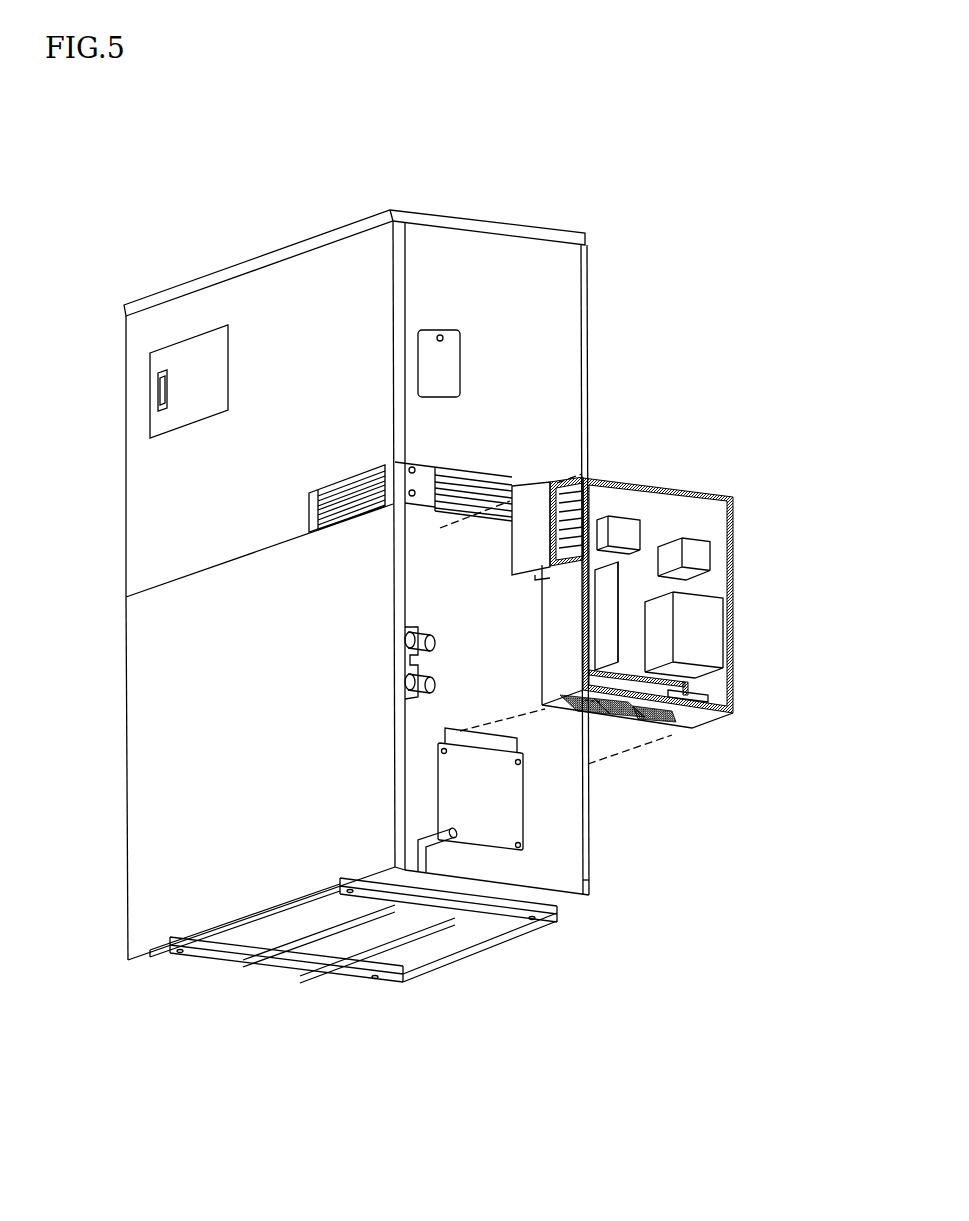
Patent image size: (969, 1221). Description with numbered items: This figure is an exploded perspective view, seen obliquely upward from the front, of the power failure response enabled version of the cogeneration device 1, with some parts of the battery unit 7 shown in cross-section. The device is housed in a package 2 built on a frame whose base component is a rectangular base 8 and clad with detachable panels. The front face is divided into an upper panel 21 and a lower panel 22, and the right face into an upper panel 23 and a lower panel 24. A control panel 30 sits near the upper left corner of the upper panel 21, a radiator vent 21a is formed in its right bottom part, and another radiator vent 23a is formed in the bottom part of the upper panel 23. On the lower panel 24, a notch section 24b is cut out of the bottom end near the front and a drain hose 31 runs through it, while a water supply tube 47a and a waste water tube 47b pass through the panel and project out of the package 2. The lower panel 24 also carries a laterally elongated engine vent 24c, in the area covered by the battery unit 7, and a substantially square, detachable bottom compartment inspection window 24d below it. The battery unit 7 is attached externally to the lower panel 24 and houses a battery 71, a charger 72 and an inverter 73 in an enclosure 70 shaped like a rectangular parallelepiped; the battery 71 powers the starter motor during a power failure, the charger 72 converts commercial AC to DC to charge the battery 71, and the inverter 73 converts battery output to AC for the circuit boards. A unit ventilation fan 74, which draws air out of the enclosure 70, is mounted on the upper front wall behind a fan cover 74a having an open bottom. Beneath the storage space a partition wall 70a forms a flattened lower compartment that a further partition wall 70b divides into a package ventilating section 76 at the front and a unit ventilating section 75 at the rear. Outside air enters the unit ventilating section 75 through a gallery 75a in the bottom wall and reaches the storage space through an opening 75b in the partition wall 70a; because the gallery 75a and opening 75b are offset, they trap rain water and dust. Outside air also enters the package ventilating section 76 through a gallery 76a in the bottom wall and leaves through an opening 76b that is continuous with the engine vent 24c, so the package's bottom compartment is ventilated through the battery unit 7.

The cogeneration device 1 is at (578, 168).
The package 2 is at (362, 213).
The battery unit 7 is at (728, 460).
The rectangular base 8 is at (362, 945).
The upper panel 21 is at (160, 505).
The radiator vent 21a is at (305, 500).
The lower panel 22 is at (160, 765).
The upper panel 23 is at (560, 293).
The radiator vent 23a is at (470, 487).
The lower panel 24 is at (553, 800).
The notch section 24b is at (420, 863).
The engine vent 24c is at (458, 762).
The bottom compartment inspection window 24d is at (588, 884).
The control panel 30 is at (172, 365).
The drain hose 31 is at (433, 838).
The water supply tube 47a is at (405, 637).
The waste water tube 47b is at (405, 680).
The enclosure 70 is at (677, 487).
The partition wall 70a is at (600, 673).
The partition wall 70b is at (672, 705).
The battery 71 is at (710, 638).
The charger 72 is at (700, 556).
The inverter 73 is at (627, 530).
The unit ventilation fan 74 is at (600, 495).
The fan cover 74a is at (532, 487).
The unit ventilating section 75 is at (716, 701).
The gallery 75a is at (690, 707).
The opening 75b is at (692, 692).
The package ventilating section 76 is at (637, 717).
The gallery 76a is at (605, 715).
The opening 76b is at (585, 700).